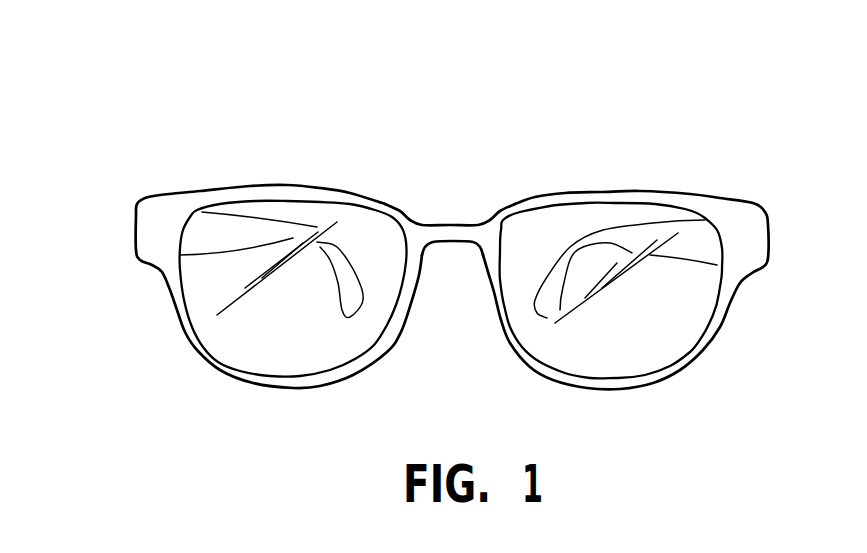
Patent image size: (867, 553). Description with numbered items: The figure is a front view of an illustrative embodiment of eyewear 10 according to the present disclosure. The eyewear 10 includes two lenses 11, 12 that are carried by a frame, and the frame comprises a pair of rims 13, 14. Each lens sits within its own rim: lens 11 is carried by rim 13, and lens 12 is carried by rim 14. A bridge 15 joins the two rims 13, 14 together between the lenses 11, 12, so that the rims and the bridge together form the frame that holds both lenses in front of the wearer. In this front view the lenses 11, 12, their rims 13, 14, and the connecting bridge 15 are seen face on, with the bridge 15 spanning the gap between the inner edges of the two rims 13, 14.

The eyewear 10 is at (166, 99).
The lens 11 is at (682, 332).
The lens 12 is at (215, 322).
The rim 13 is at (623, 198).
The rim 14 is at (292, 196).
The bridge 15 is at (455, 224).